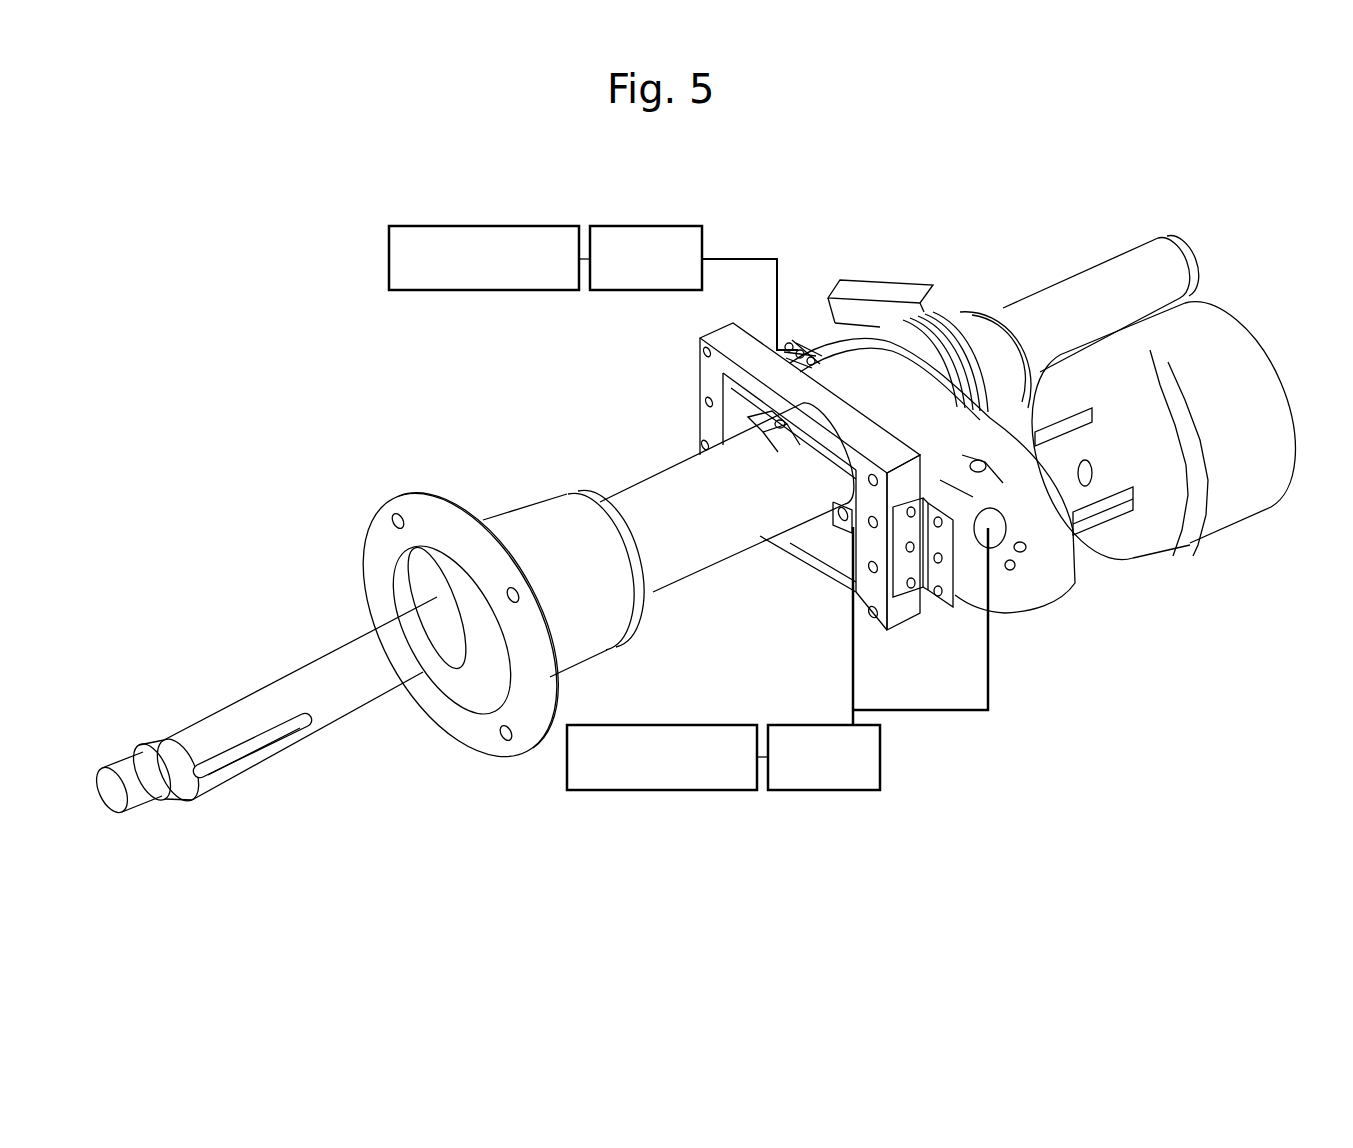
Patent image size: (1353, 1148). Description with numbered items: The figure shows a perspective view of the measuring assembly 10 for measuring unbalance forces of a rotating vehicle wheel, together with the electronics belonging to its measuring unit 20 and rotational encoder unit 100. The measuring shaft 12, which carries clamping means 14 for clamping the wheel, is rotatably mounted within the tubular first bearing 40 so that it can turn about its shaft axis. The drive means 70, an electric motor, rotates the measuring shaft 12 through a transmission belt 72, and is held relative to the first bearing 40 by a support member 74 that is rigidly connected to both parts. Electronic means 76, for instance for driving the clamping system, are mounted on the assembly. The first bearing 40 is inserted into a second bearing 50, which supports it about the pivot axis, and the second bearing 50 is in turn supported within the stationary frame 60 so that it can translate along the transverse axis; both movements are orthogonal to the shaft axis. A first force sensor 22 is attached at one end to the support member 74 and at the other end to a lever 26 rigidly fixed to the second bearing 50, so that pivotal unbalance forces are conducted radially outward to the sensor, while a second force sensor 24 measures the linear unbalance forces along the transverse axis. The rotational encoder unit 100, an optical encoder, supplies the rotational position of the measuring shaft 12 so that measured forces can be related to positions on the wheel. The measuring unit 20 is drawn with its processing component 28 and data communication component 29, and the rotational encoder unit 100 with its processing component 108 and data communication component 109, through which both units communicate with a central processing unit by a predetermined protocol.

The measuring assembly 10 is at (339, 302).
The measuring shaft 12 is at (271, 680).
The clamping means 14 is at (381, 527).
The measuring unit 20 is at (987, 800).
The first force sensor 22 is at (988, 547).
The second force sensor 24 is at (845, 513).
The lever 26 is at (958, 567).
The processing component 28 is at (800, 723).
The data communication component 29 is at (716, 723).
The first bearing 40 is at (673, 573).
The second bearing 50 is at (750, 417).
The stationary frame 60 is at (715, 362).
The drive means 70 is at (1218, 510).
The transmission belt 72 is at (955, 327).
The support member 74 is at (1062, 563).
The electronic means 76 is at (862, 282).
The rotational encoder unit 100 is at (798, 350).
The processing component 108 is at (629, 223).
The data communication component 109 is at (543, 223).